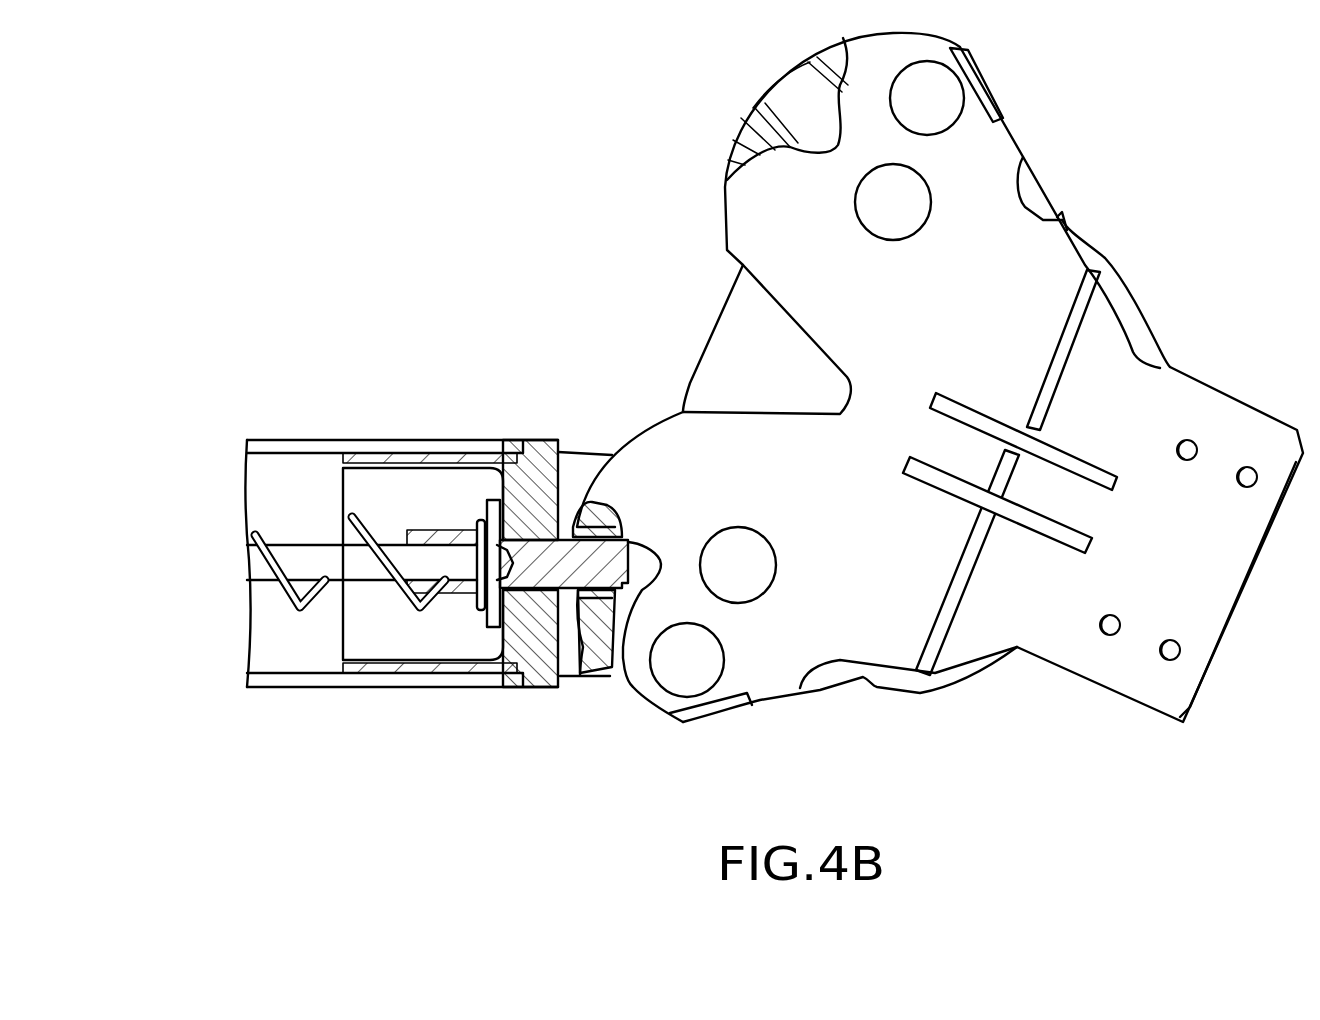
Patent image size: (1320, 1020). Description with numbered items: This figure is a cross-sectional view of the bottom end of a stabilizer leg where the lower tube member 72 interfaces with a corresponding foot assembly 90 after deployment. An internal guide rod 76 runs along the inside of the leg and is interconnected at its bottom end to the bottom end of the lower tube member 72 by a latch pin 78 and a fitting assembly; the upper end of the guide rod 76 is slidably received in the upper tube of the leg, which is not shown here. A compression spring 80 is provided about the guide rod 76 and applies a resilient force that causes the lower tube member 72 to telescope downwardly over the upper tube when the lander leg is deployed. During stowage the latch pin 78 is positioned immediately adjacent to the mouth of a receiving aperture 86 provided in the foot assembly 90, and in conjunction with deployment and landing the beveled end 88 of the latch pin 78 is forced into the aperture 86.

The lower tube member 72 is at (310, 688).
The internal guide rod 76 is at (246, 564).
The latch pin 78 is at (533, 547).
The compression spring 80 is at (347, 518).
The receiving aperture 86 is at (608, 593).
The beveled end 88 is at (622, 587).
The foot assembly 90 is at (1028, 133).